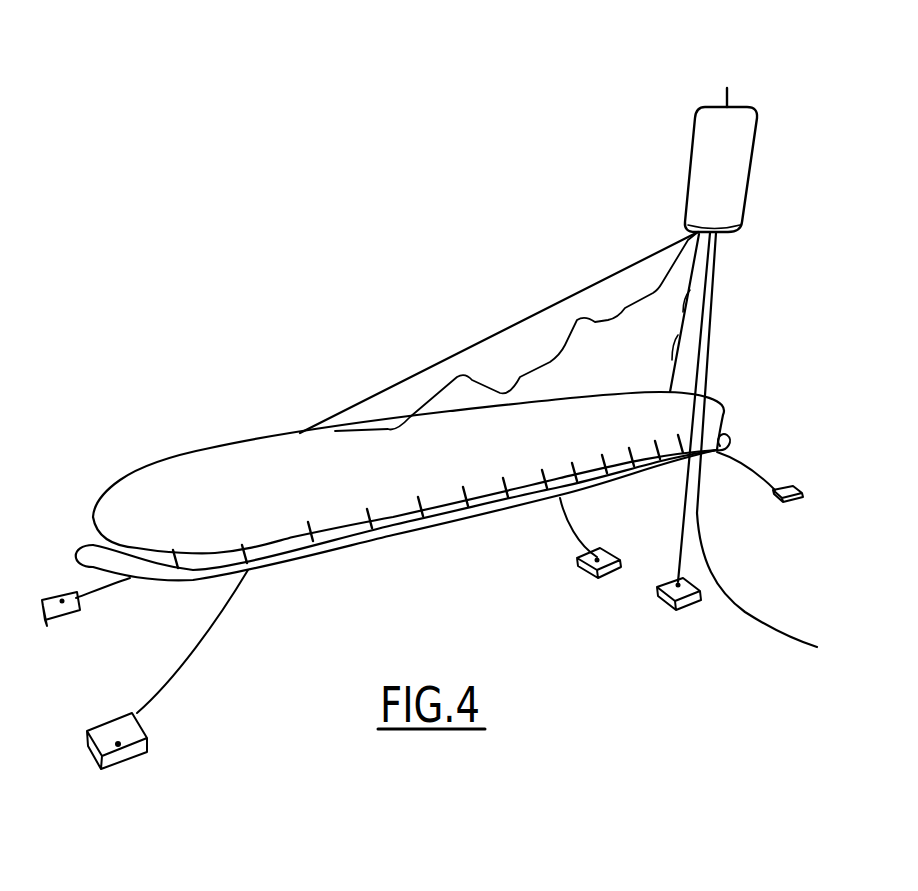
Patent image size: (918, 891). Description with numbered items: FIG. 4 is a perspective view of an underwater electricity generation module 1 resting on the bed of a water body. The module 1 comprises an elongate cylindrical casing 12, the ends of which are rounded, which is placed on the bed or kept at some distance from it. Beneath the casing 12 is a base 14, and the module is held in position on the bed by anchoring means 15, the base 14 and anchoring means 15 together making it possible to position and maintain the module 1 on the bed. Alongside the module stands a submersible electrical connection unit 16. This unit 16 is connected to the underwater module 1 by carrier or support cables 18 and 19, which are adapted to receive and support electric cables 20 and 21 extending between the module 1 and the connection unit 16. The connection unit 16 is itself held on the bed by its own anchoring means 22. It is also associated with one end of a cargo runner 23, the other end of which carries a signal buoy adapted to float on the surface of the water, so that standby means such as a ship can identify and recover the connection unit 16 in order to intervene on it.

The underwater electricity generation module 1 is at (274, 422).
The elongate cylindrical casing 12 is at (208, 452).
The base 14 is at (151, 588).
The anchoring means 15 is at (158, 726).
The submersible electrical connection unit 16 is at (760, 132).
The carrier or support cable 18 is at (598, 301).
The carrier or support cable 19 is at (673, 295).
The electric cable 20 is at (623, 306).
The electric cable 21 is at (681, 347).
The anchoring means 22 is at (673, 616).
The cargo runner 23 is at (714, 93).